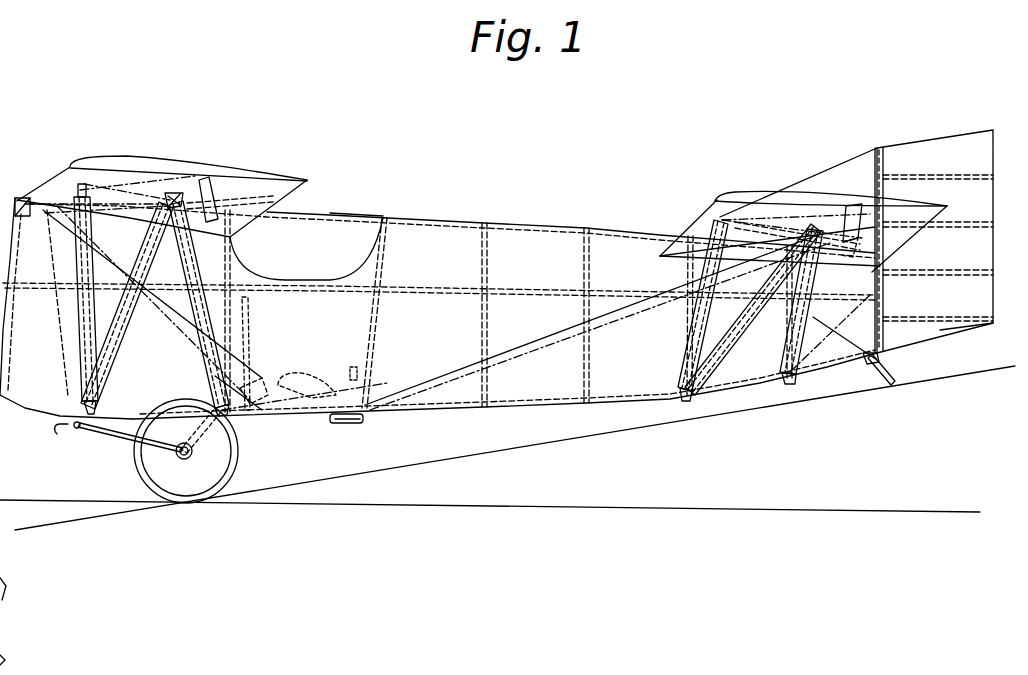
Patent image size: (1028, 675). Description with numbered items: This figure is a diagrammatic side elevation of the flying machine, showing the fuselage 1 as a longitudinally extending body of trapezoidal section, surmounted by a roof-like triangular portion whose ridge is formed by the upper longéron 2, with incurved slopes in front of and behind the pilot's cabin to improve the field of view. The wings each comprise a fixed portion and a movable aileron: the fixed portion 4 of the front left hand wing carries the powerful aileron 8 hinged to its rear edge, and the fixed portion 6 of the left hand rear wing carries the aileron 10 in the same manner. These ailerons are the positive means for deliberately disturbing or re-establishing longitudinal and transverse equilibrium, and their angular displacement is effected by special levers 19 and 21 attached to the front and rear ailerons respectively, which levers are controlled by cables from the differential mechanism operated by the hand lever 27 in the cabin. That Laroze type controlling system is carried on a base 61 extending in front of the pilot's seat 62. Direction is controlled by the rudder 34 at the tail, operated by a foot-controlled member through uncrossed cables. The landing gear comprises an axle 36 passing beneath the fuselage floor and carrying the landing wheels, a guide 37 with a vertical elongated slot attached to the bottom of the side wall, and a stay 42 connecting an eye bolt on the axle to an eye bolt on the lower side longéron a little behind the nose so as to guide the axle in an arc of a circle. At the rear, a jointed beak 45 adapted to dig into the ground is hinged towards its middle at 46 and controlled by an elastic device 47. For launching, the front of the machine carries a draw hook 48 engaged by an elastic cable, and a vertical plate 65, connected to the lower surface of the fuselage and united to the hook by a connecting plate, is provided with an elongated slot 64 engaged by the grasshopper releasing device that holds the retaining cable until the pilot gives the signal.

The fuselage 1 is at (516, 308).
The upper longéron 2 is at (363, 217).
The fixed portion of front left hand wing 4 is at (147, 157).
The fixed portion of left hand rear wing 6 is at (736, 199).
The aileron of left hand forward wing 8 is at (246, 168).
The aileron of left hand rear wing 10 is at (900, 198).
The lever 19 is at (240, 197).
The lever 21 is at (848, 227).
The hand lever 27 is at (253, 313).
The rudder 34 is at (983, 315).
The axle 36 is at (183, 458).
The guide 37 is at (191, 442).
The stay 42 is at (113, 433).
The tail skid 45 is at (895, 382).
The hinge of rear jointed beak 46 is at (866, 365).
The elastic device 47 is at (840, 315).
The draw hook 48 is at (53, 432).
The base 61 is at (263, 405).
The pilot's seat 62 is at (302, 380).
The elongated slot 64 is at (345, 425).
The vertical plate 65 is at (365, 421).